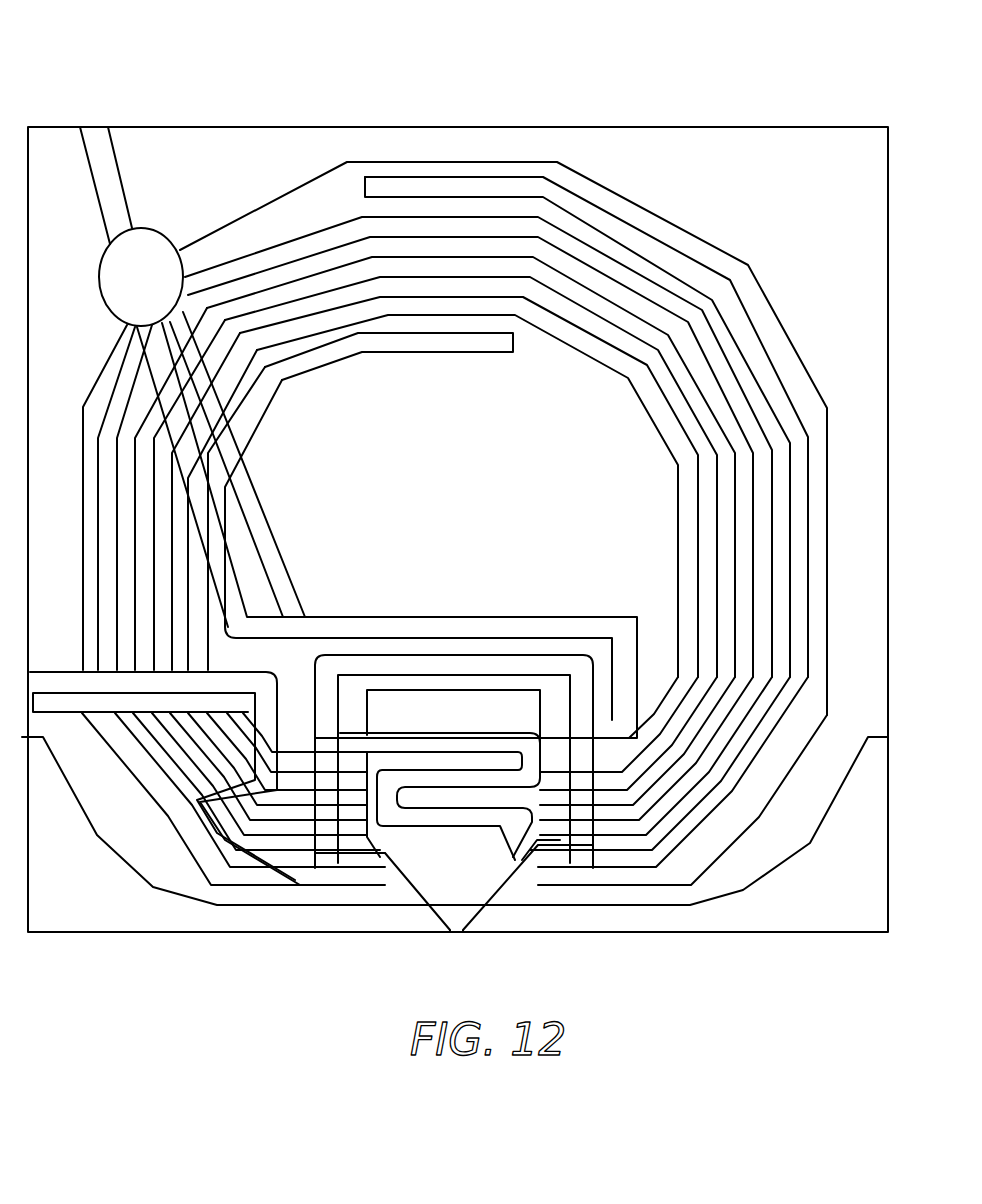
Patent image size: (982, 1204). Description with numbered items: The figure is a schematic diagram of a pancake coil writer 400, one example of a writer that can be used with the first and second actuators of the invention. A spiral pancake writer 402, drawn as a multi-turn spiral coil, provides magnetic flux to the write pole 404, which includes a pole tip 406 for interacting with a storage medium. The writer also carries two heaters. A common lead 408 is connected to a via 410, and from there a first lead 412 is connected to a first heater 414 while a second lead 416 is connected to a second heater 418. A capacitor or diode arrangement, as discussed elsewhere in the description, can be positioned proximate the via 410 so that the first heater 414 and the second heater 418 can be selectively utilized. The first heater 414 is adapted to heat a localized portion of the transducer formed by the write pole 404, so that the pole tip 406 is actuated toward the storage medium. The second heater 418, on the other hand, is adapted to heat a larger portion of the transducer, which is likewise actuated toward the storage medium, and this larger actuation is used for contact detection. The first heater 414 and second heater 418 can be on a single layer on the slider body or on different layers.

The pancake coil writer 400 is at (334, 118).
The spiral pancake writer 402 is at (508, 172).
The write pole 404 is at (396, 879).
The pole tip 406 is at (453, 931).
The common lead 408 is at (120, 170).
The via 410 is at (98, 279).
The first lead 412 is at (255, 508).
The first heater 414 is at (433, 737).
The second lead 416 is at (152, 366).
The second heater 418 is at (676, 842).